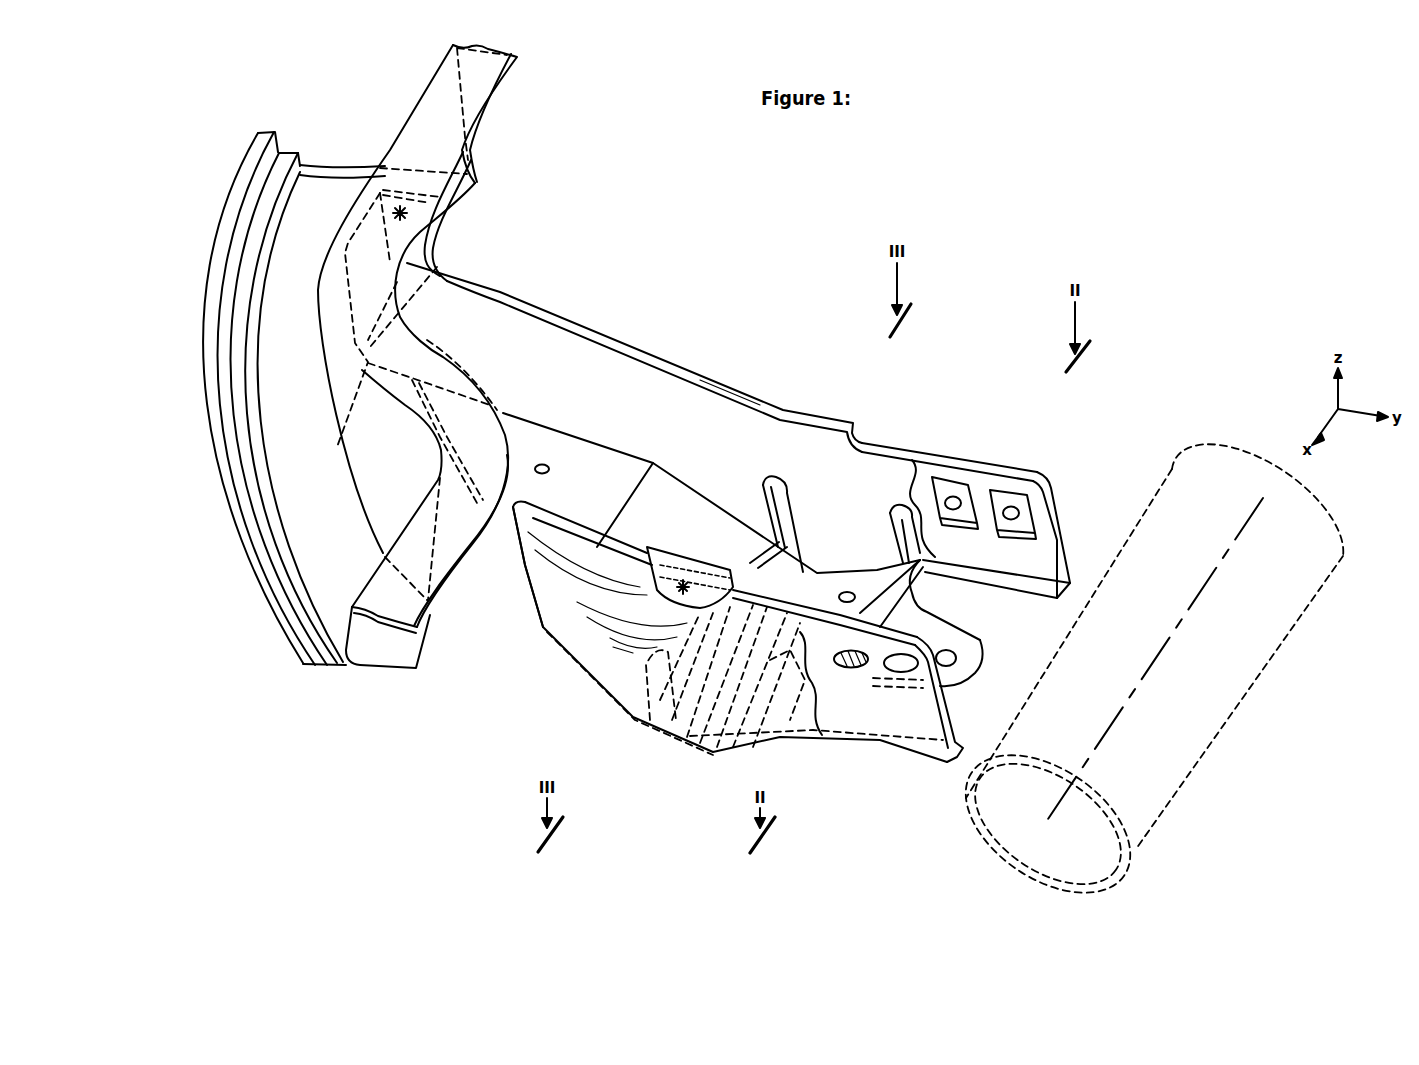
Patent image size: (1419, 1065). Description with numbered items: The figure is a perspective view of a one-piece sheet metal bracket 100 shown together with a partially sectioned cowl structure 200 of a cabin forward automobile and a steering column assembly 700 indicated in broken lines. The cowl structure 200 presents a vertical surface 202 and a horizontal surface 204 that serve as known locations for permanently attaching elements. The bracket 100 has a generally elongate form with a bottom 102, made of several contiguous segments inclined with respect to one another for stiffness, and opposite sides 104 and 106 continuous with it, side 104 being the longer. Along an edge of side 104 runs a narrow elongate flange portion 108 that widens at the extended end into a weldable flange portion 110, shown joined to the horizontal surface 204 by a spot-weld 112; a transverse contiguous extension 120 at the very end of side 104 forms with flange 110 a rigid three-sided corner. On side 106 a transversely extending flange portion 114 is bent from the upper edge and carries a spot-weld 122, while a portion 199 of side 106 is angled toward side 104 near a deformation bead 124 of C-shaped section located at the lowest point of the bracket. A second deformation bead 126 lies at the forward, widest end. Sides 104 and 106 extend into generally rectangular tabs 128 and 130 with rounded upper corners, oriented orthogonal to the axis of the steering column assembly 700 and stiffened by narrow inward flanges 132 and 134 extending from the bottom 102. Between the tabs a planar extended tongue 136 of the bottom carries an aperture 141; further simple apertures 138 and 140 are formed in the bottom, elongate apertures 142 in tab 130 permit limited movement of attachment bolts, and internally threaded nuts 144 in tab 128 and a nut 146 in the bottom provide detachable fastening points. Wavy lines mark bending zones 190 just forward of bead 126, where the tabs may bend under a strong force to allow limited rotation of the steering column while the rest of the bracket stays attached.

The bracket 100 is at (584, 302).
The bottom 102 is at (662, 473).
The side 104 is at (735, 423).
The side 106 is at (613, 627).
The flange portion 108 is at (627, 347).
The weldable flange portion 110 is at (420, 255).
The spot-weld 112 is at (450, 205).
The transversely extending flange portion 114 is at (703, 598).
The transverse contiguous extension 120 is at (360, 293).
The spot-weld 122 is at (687, 577).
The deformation bead 124 is at (777, 477).
The deformation bead 126 is at (905, 523).
The tab 128 is at (1060, 540).
The tab 130 is at (930, 723).
The narrow inward flange 132 is at (997, 577).
The narrow inward flange 134 is at (957, 745).
The planar extended tongue 136 is at (975, 638).
The aperture 138 is at (542, 465).
The aperture 140 is at (847, 592).
The aperture 141 is at (958, 661).
The elongate apertures 142 is at (900, 665).
The internally threaded nuts 144 is at (948, 480).
The nut 146 is at (753, 720).
The bending zones 190 is at (908, 458).
The portion of side 199 is at (545, 560).
The cowl structure 200 is at (200, 183).
The vertical surface 202 is at (440, 223).
The horizontal surface 204 is at (482, 90).
The steering column assembly 700 is at (1231, 737).